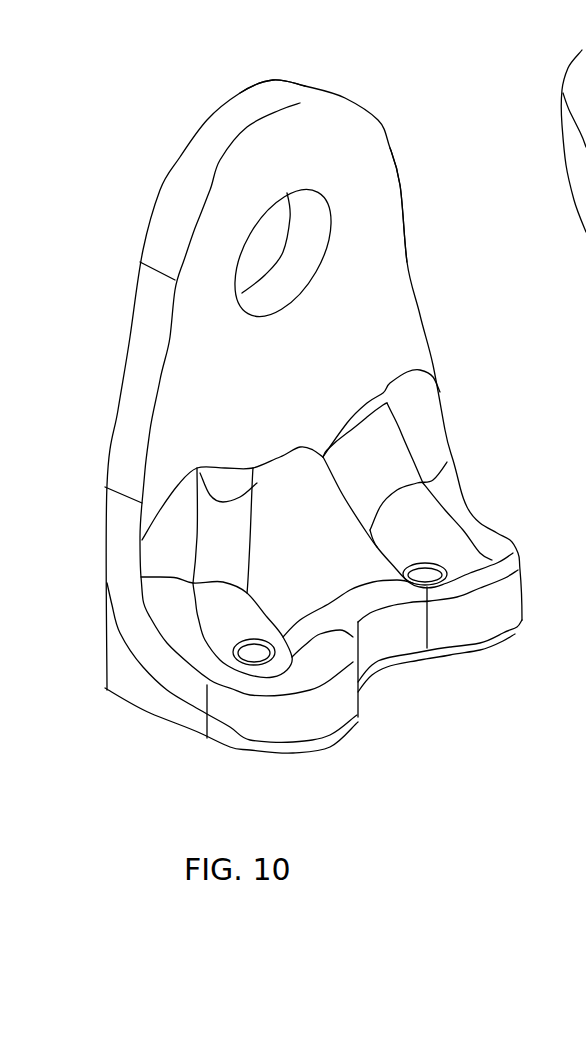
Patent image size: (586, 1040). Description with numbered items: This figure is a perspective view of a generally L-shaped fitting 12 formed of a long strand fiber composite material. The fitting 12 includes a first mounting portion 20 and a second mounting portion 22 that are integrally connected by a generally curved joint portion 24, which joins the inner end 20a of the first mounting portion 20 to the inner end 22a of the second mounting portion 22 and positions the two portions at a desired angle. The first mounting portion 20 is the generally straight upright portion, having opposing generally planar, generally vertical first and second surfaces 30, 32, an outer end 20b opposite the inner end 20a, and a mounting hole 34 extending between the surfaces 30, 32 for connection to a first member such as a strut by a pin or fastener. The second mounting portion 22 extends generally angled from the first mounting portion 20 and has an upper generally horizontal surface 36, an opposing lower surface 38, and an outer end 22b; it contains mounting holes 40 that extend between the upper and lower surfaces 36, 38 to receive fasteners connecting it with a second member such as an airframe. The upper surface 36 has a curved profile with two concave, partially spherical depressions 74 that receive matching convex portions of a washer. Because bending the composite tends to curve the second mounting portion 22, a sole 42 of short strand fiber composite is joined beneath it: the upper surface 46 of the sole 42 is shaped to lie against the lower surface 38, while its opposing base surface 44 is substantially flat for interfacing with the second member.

The fitting 12 is at (491, 395).
The first mounting portion 20 is at (128, 322).
The inner end of first mounting portion 20a is at (122, 517).
The outer end of first mounting portion 20b is at (272, 86).
The second mounting portion 22 is at (475, 624).
The inner end of second mounting portion 22a is at (125, 598).
The outer end of second mounting portion 22b is at (397, 640).
The joint portion 24 is at (123, 567).
The first surface of first mounting portion 30 is at (383, 264).
The second surface of first mounting portion 32 is at (153, 201).
The mounting hole 34 is at (318, 225).
The upper surface of second mounting portion 36 is at (330, 574).
The lower surface of second mounting portion 38 is at (296, 738).
The mounting hole of second mounting portion 40 is at (258, 650).
The sole 42 is at (110, 665).
The base surface 44 is at (150, 713).
The upper surface of sole 46 is at (182, 712).
The partially spherical depressions 74 is at (223, 640).